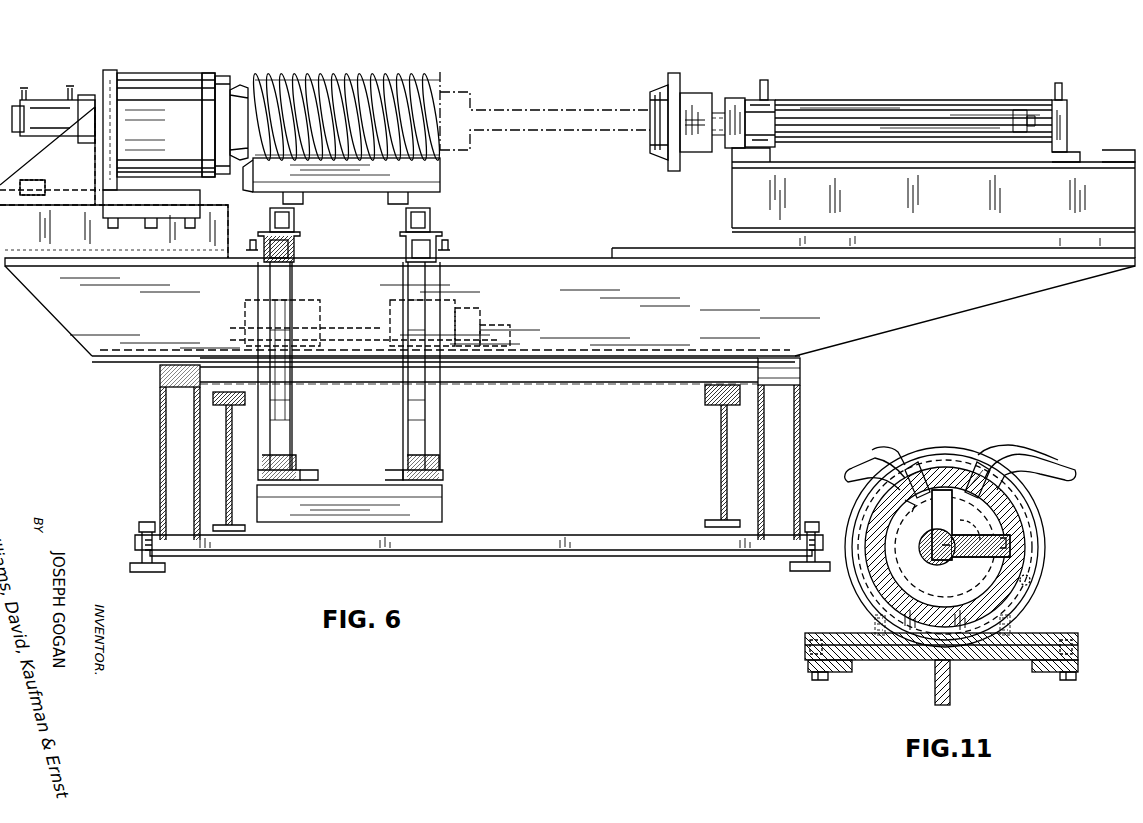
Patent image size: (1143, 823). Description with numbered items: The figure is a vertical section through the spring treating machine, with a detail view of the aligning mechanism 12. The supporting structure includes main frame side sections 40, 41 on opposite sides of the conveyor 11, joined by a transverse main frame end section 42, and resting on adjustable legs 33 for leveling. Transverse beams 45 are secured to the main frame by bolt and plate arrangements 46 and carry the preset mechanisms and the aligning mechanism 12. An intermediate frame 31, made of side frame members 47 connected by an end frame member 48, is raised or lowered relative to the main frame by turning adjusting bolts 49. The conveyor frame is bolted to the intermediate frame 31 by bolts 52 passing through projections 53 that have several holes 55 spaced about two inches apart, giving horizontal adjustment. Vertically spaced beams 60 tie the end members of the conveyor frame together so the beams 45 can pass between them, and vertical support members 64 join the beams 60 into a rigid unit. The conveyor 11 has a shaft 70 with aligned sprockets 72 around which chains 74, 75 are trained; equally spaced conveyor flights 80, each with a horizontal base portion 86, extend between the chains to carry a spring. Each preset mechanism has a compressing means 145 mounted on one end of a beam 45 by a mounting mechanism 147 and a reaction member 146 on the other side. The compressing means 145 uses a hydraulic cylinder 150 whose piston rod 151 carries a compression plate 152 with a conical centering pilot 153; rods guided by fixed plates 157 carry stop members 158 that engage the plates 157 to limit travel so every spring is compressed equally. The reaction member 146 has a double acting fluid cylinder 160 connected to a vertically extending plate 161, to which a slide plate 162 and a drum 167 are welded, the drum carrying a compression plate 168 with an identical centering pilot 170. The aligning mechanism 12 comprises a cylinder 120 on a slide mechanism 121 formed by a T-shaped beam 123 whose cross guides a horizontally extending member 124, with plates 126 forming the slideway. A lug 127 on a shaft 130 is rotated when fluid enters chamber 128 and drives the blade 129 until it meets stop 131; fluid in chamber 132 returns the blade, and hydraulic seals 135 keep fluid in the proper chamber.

In FIG. 6, the conveyor 11 is at (448, 203).
In FIG. 11, the aligning mechanism 12 is at (1050, 556).
In FIG. 6, the intermediate frame 31 is at (718, 426).
In FIG. 6, the adjustable legs 33 is at (135, 570).
In FIG. 6, the main frame side section 40 is at (800, 422).
In FIG. 6, the main frame side section 41 is at (160, 418).
In FIG. 6, the main frame end section 42 is at (612, 384).
In FIG. 6, the beam 45 is at (1018, 298).
In FIG. 6, the bolt and plate arrangement 46 is at (160, 378).
In FIG. 6, the side frame member 47 is at (222, 460).
In FIG. 6, the end frame member 48 is at (695, 345).
In FIG. 6, the adjusting bolt 49 is at (465, 324).
In FIG. 6, the bolt 52 is at (398, 318).
In FIG. 6, the projection 53 is at (316, 316).
In FIG. 6, the hole 55 is at (350, 334).
In FIG. 6, the beam 60 is at (250, 240).
In FIG. 6, the vertically extending support member 64 is at (258, 424).
In FIG. 6, the shaft 70 is at (485, 340).
In FIG. 6, the sprocket 72 is at (300, 243).
In FIG. 6, the chain 74 is at (430, 222).
In FIG. 6, the chain 75 is at (294, 232).
In FIG. 6, the conveyor flight 80 is at (440, 182).
In FIG. 6, the horizontal base portion 86 is at (253, 192).
In FIG. 11, the cylinder 120 is at (962, 445).
In FIG. 11, the slide mechanism 121 is at (1080, 648).
In FIG. 11, the T-shaped beam 123 is at (990, 660).
In FIG. 11, the horizontally extending member 124 is at (805, 652).
In FIG. 11, the plate 126 is at (850, 670).
In FIG. 11, the lug 127 is at (1032, 578).
In FIG. 11, the chamber 128 is at (992, 510).
In FIG. 11, the blade 129 is at (982, 558).
In FIG. 11, the shaft 130 is at (935, 558).
In FIG. 11, the stop 131 is at (912, 508).
In FIG. 11, the chamber 132 is at (925, 460).
In FIG. 11, the hydraulic seal 135 is at (945, 516).
In FIG. 6, the compressing means 145 is at (748, 85).
In FIG. 6, the reaction member 146 is at (150, 73).
In FIG. 6, the mounting mechanism 147 is at (730, 190).
In FIG. 6, the hydraulic cylinder 150 is at (876, 100).
In FIG. 6, the piston rod 151 is at (725, 98).
In FIG. 6, the compression plate 152 is at (674, 73).
In FIG. 6, the centering pilot 153 is at (650, 92).
In FIG. 6, the fixed plate 157 is at (764, 82).
In FIG. 6, the stop member 158 is at (1052, 108).
In FIG. 6, the double acting fluid cylinder 160 is at (42, 100).
In FIG. 6, the vertically extending plate 161 is at (110, 70).
In FIG. 6, the slide plate 162 is at (103, 190).
In FIG. 6, the drum 167 is at (210, 73).
In FIG. 6, the compression plate 168 is at (222, 76).
In FIG. 6, the centering pilot 170 is at (242, 85).